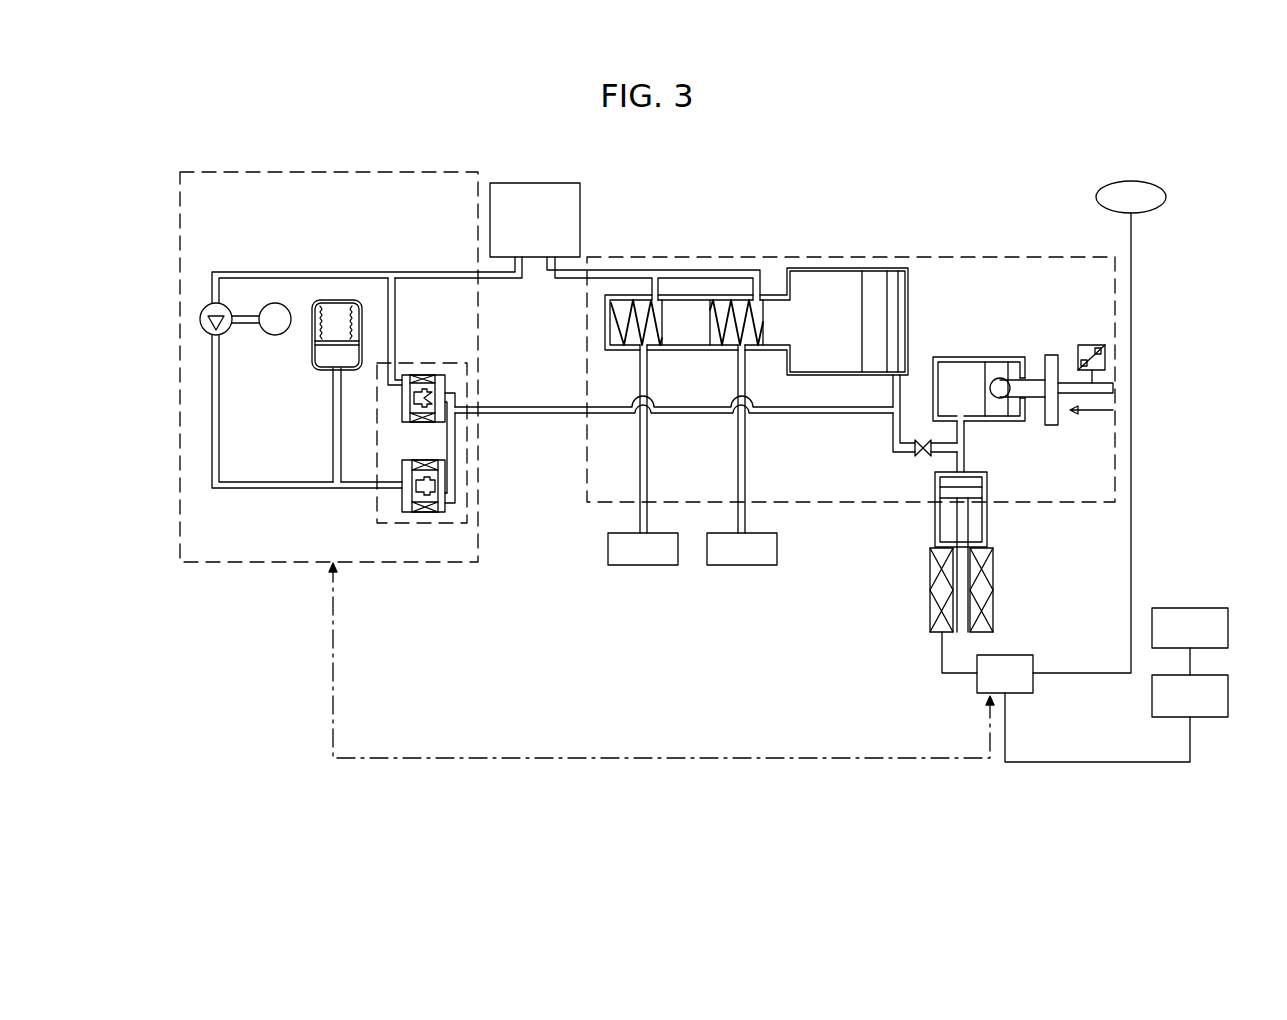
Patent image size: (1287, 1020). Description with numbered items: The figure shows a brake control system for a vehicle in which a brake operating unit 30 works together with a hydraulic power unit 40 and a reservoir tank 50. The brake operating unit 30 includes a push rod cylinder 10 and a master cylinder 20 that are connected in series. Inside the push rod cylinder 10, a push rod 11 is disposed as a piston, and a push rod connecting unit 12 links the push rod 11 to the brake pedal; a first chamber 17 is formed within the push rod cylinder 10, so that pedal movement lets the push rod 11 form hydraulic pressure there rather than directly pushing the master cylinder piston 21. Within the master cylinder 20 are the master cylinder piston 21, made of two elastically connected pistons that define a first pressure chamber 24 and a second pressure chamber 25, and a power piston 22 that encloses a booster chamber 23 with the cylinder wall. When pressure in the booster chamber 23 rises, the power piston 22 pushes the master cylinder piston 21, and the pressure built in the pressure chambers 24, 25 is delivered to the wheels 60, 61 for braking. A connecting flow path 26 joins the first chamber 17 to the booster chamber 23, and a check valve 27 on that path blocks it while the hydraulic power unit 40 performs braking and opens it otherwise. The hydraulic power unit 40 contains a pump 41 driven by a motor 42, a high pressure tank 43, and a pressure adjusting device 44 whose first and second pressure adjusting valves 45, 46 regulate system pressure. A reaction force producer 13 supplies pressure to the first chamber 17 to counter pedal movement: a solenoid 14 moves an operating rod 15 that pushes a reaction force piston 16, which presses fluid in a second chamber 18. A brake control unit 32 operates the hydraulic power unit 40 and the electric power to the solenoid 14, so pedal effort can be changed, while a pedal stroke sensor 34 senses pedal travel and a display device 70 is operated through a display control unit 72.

The push rod cylinder 10 is at (1005, 360).
The push rod 11 is at (997, 413).
The push rod connecting unit 12 is at (1035, 390).
The reaction force producer 13 is at (988, 520).
The solenoid 14 is at (992, 600).
The operating rod 15 is at (963, 563).
The reaction force piston 16 is at (940, 492).
The first chamber 17 is at (952, 370).
The second chamber 18 is at (935, 478).
The master cylinder 20 is at (765, 299).
The master cylinder piston 21 is at (777, 338).
The power piston 22 is at (875, 280).
The booster chamber 23 is at (897, 282).
The first pressure chamber 24 is at (728, 305).
The second pressure chamber 25 is at (645, 300).
The connecting flow path 26 is at (887, 414).
The check valve 27 is at (921, 437).
The brake operating unit 30 is at (1073, 257).
The brake control unit 32 is at (975, 690).
The pedal stroke sensor 34 is at (1131, 181).
The hydraulic power unit 40 is at (247, 562).
The pump 41 is at (200, 302).
The motor 42 is at (272, 337).
The high pressure tank 43 is at (314, 362).
The pressure adjusting device 44 is at (423, 524).
The first pressure adjusting valve 45 is at (401, 503).
The second pressure adjusting valve 46 is at (421, 374).
The reservoir tank 50 is at (580, 192).
The wheel 60 is at (641, 568).
The wheel 61 is at (740, 568).
The display device 70 is at (1197, 607).
The display control unit 72 is at (1150, 705).